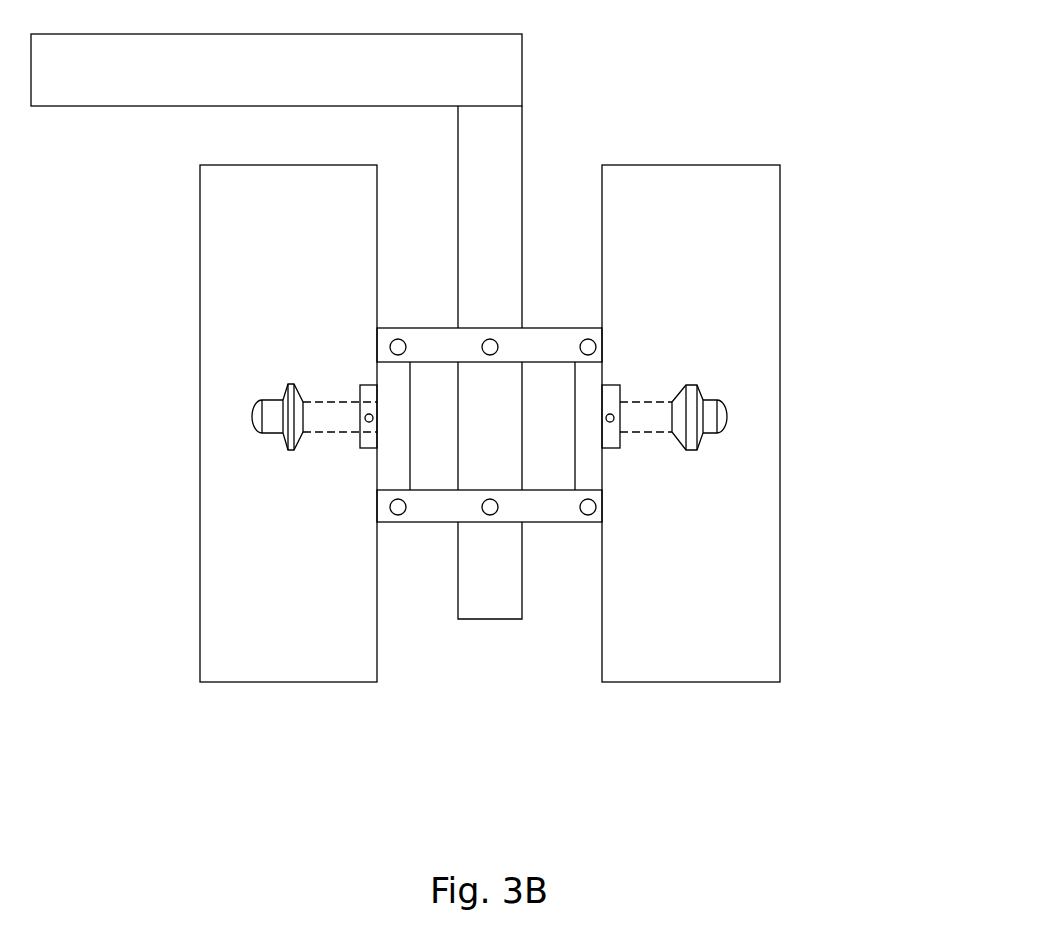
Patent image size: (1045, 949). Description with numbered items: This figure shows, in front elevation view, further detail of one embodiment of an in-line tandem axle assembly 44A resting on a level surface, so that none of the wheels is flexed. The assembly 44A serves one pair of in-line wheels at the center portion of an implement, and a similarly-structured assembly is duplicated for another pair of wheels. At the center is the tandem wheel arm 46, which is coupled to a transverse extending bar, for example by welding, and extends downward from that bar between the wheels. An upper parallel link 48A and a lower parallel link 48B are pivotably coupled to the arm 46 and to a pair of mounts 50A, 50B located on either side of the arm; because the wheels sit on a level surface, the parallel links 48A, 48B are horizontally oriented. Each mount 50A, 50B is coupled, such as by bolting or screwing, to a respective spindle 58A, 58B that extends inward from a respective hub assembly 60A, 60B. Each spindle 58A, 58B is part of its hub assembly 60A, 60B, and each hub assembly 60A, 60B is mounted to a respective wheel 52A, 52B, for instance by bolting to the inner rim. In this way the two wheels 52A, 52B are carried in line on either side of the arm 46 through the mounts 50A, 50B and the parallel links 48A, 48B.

The in-line tandem axle assembly 44A is at (853, 120).
The tandem wheel arm 46 is at (512, 168).
The upper parallel link 48A is at (413, 326).
The lower parallel link 48B is at (437, 523).
The mount 50A is at (393, 382).
The mount 50B is at (584, 388).
The wheel 52A is at (200, 387).
The wheel 52B is at (780, 349).
The spindle 58A is at (337, 433).
The spindle 58B is at (640, 402).
The hub assembly 60A is at (286, 452).
The hub assembly 60B is at (688, 385).